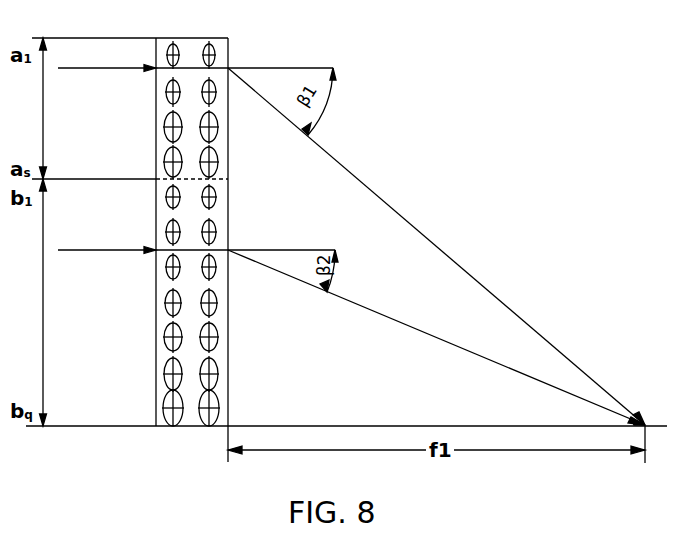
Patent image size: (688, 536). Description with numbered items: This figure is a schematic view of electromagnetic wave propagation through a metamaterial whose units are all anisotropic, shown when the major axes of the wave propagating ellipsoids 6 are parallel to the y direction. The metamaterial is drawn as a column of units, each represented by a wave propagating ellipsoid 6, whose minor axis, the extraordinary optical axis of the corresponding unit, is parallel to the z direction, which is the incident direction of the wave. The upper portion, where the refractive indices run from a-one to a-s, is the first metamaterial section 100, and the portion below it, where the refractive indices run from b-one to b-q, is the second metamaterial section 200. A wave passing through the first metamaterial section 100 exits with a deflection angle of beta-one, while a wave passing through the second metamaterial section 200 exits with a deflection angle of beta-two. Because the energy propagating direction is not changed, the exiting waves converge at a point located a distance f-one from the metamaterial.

The wave propagating ellipsoid 6 is at (228, 47).
The first metamaterial section 100 is at (163, 138).
The second metamaterial section 200 is at (163, 327).